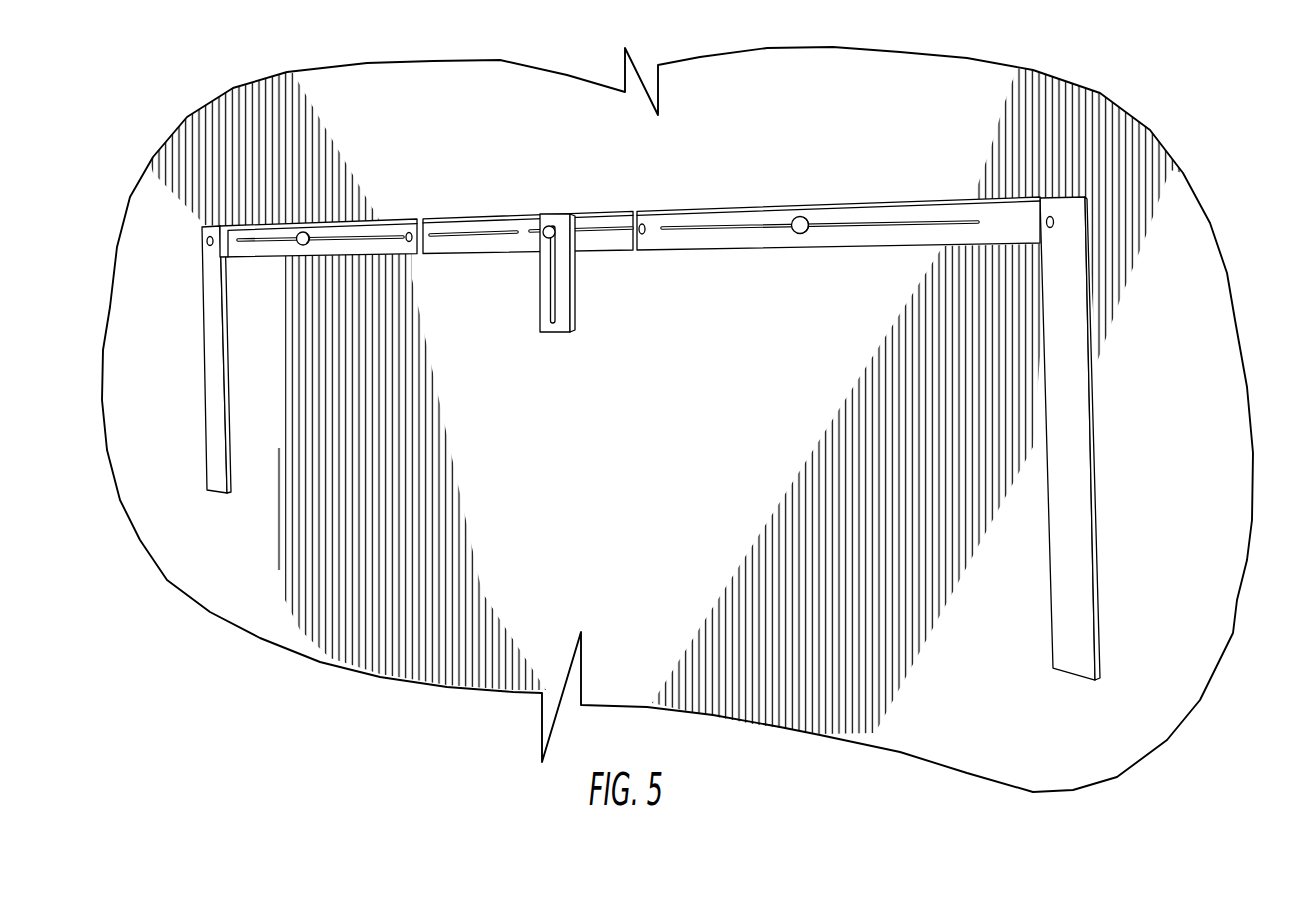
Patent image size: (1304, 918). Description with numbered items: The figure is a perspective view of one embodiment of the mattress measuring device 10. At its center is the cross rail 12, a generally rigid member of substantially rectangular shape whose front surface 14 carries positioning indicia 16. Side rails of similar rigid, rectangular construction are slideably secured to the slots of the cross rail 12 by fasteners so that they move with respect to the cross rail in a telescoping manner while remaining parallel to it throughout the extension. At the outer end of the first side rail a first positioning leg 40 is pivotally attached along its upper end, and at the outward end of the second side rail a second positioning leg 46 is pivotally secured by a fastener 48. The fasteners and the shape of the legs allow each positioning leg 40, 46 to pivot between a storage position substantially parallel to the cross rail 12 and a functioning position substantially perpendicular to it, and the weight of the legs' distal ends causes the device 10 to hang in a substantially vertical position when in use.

The mattress measuring device 10 is at (662, 378).
The cross rail 12 is at (623, 212).
The front surface 14 is at (730, 248).
The positioning indicia 16 is at (405, 222).
The first positioning leg 40 is at (202, 382).
The second positioning leg 46 is at (1065, 455).
The fastener 48 is at (205, 241).